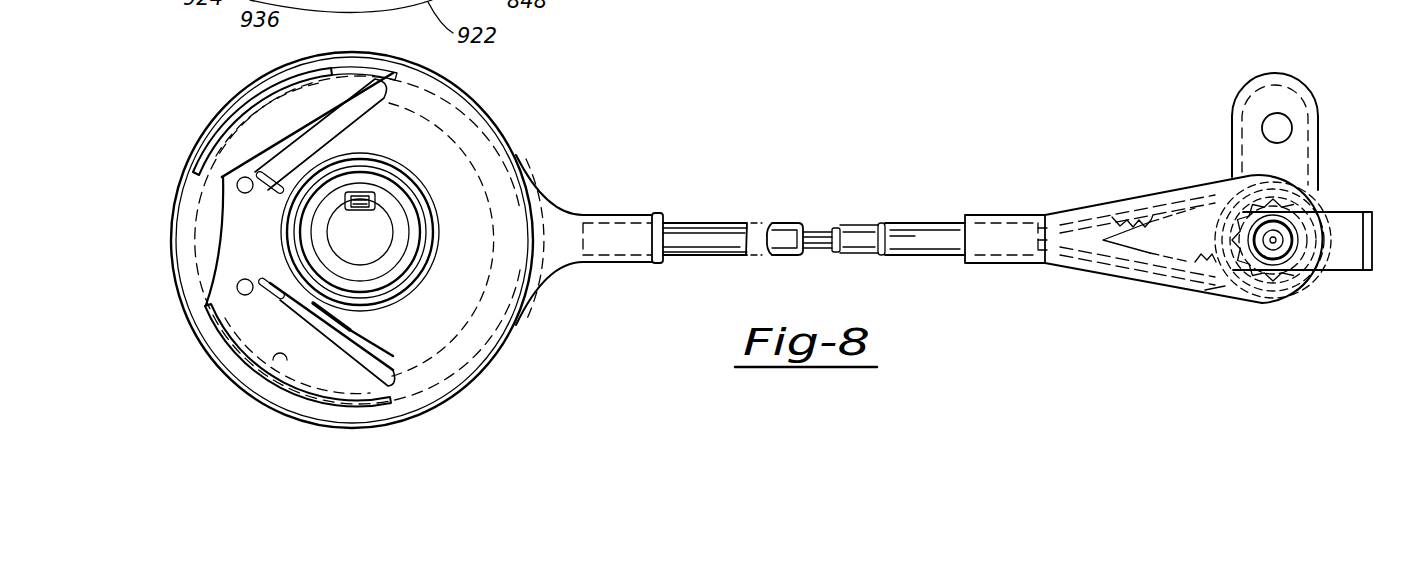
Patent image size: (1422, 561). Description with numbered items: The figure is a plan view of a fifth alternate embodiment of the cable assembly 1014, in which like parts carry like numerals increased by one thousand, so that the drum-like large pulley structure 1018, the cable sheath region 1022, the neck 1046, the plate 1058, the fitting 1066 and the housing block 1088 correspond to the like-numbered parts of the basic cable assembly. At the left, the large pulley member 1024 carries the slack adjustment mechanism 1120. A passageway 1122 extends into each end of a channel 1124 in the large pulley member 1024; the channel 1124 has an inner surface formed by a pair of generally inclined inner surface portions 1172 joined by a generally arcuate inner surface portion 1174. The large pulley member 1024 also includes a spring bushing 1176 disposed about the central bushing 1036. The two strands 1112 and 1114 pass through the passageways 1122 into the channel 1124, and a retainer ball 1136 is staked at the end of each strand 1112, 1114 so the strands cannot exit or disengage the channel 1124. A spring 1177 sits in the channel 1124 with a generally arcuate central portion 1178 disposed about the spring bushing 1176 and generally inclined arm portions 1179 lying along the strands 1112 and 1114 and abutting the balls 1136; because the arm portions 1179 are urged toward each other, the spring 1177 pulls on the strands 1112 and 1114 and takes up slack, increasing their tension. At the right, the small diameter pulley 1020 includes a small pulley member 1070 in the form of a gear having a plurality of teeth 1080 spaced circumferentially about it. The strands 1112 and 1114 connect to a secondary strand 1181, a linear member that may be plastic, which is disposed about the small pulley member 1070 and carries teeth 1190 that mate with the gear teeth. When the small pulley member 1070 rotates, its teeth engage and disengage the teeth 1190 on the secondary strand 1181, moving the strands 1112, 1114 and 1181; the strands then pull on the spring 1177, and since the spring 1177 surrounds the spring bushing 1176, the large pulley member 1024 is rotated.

The drum brake assembly 1018 is at (507, 113).
The spring 1177 is at (412, 92).
The arcuate central portion 1178 is at (415, 193).
The central bushing 1036 is at (445, 312).
The backing plate 1058 is at (228, 343).
The inclined arm portions 1179 is at (265, 184).
The large pulley member 1024 is at (460, 263).
The spring bushing 1176 is at (420, 189).
The arcuate inner surface portion 1174 is at (440, 233).
The slack adjustment mechanism 1120 is at (302, 148).
The passageway 1122 is at (380, 367).
The inclined inner surface portions 1172 is at (445, 375).
The housing neck 1046 is at (500, 360).
The ball 1136 is at (237, 290).
The channel 1124 is at (280, 354).
The cable fitting 1066 is at (612, 213).
The cable sheath 1022 is at (709, 255).
The strand 1114 is at (824, 228).
The strand 1112 is at (817, 245).
The cable assembly 1014 is at (697, 170).
The small pulley member 1070 is at (1287, 300).
The mounting block 1088 is at (1327, 277).
The small diameter pulley 1020 is at (1333, 194).
The teeth 1080 is at (1220, 182).
The teeth 1190 is at (1240, 310).
The secondary strand 1181 is at (1203, 300).